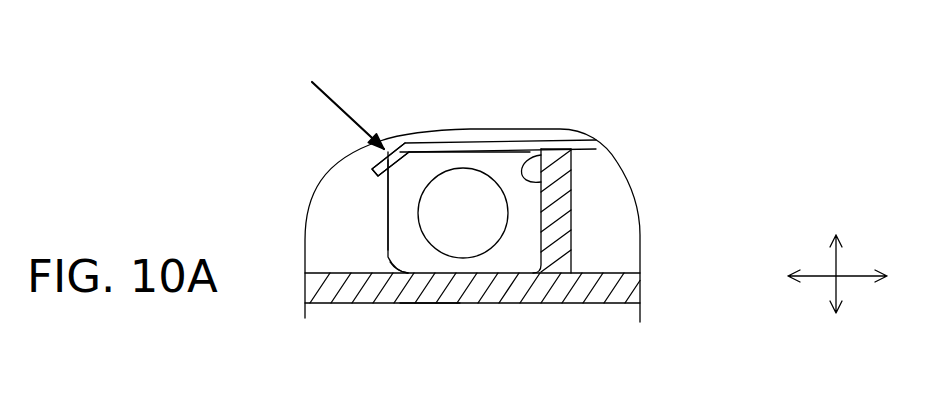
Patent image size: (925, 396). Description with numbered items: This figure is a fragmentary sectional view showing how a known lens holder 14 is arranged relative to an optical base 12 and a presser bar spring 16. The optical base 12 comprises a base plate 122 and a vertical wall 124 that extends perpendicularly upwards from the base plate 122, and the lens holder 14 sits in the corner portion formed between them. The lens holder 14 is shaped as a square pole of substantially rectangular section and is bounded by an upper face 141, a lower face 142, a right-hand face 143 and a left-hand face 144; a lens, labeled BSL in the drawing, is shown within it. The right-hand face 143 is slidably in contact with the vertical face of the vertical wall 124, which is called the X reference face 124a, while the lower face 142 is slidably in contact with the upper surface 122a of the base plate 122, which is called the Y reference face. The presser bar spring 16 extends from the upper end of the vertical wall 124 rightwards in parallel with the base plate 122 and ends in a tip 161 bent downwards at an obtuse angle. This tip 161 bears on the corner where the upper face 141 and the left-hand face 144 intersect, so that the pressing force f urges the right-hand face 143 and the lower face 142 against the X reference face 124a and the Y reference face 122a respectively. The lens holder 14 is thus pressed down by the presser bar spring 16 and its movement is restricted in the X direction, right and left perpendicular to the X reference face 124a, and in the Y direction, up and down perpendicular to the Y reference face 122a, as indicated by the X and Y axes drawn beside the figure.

The optical base 12 is at (628, 287).
The base plate 122 is at (490, 297).
The surface of the base plate 122a is at (430, 298).
The vertical wall 124 is at (571, 189).
The X reference face 124a is at (562, 166).
The lens holder 14 is at (403, 238).
The upper face 141 is at (455, 152).
The lower face 142 is at (388, 257).
The right-hand face 143 is at (541, 153).
The left-hand face 144 is at (387, 190).
The presser bar spring 16 is at (482, 142).
The tip 161 is at (376, 156).
The beam splitter lens BSL is at (486, 211).
The pressing force f is at (328, 94).
The X direction X is at (863, 278).
The Y direction Y is at (837, 255).